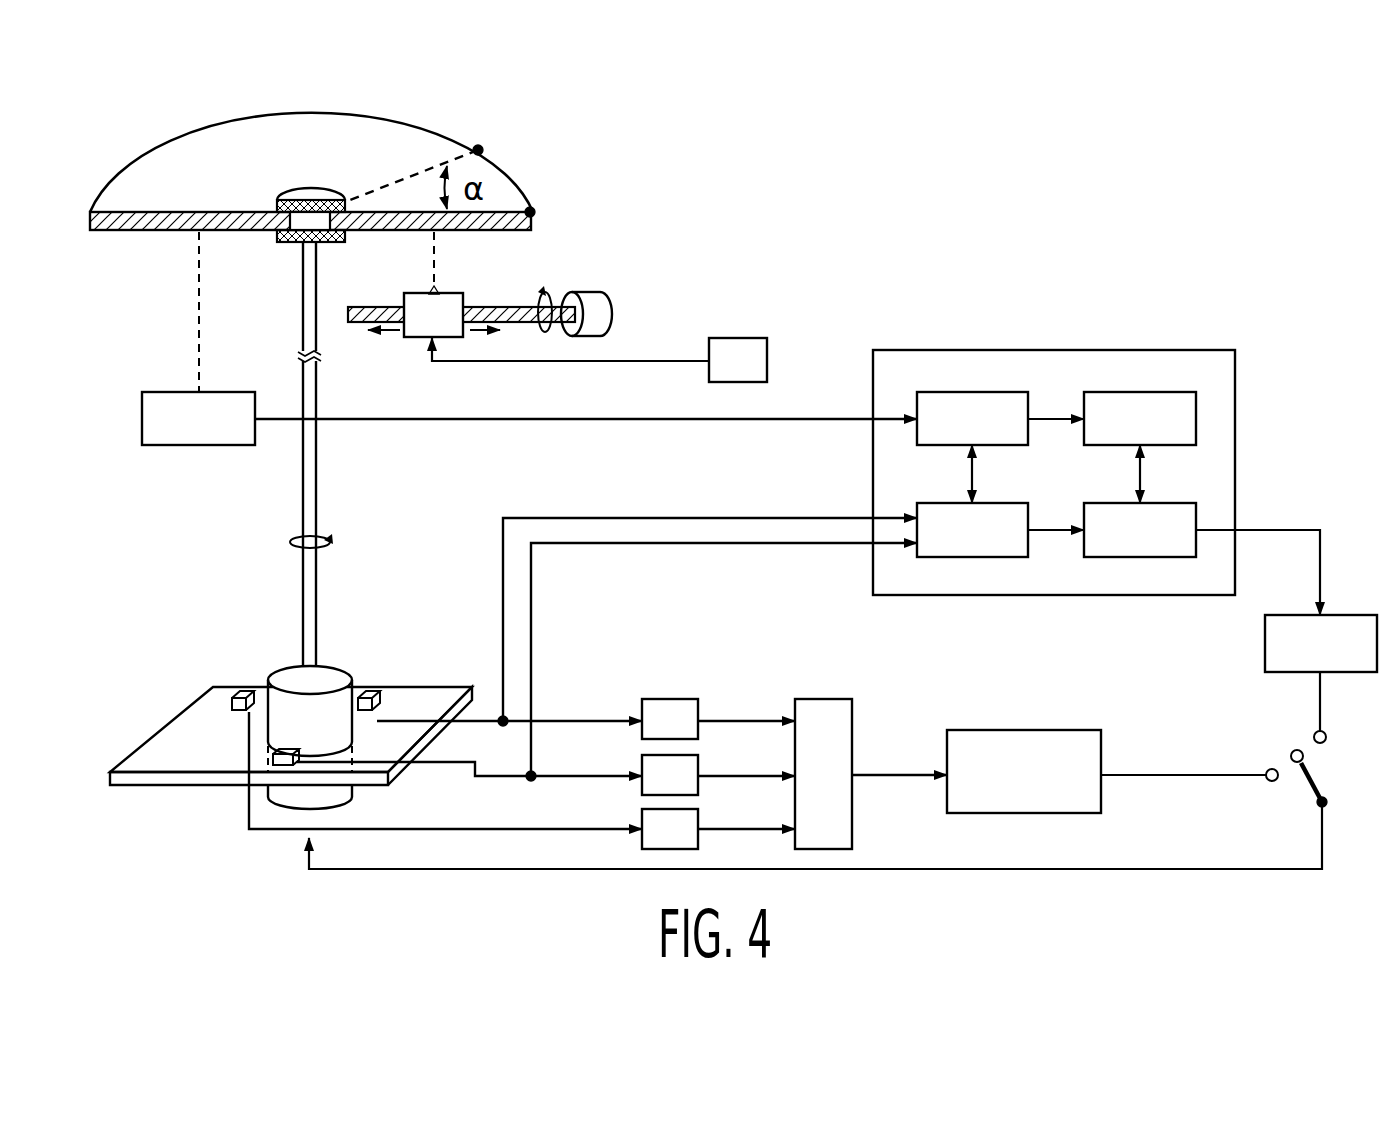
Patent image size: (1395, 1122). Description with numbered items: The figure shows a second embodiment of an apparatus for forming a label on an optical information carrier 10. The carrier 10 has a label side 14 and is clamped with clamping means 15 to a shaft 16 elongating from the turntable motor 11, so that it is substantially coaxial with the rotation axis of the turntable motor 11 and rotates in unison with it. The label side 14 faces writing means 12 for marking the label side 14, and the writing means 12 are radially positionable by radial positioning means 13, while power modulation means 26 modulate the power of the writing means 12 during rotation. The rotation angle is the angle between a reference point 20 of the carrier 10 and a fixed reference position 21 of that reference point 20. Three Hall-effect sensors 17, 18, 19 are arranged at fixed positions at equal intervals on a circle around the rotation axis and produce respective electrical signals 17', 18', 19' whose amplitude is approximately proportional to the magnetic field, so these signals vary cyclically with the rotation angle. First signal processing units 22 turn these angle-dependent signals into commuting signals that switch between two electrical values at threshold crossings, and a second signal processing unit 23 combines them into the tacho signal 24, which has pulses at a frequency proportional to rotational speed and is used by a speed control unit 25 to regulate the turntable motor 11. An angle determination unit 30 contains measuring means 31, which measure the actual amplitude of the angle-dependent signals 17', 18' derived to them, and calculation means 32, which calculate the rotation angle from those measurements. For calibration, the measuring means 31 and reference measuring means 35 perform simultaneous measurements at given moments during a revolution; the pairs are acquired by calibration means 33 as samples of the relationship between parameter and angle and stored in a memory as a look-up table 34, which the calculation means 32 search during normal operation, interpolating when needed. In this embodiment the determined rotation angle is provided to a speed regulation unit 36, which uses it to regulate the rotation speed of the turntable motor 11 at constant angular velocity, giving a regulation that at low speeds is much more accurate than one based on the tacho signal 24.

The optical information carrier 10 is at (150, 152).
The turntable motor 11 is at (283, 672).
The writing means 12 is at (412, 337).
The radial positioning means 13 is at (590, 292).
The label side 14 is at (173, 232).
The clamping means 15 is at (305, 188).
The shaft 16 is at (312, 455).
The Hall-effect sensor 17 is at (373, 664).
The Hall-effect sensor 18 is at (256, 813).
The Hall-effect sensor 19 is at (232, 664).
The electrical signal 17' is at (509, 687).
The electrical signal 18' is at (469, 748).
The electrical signal 19' is at (445, 770).
The reference point 20 is at (478, 150).
The fixed reference position 21 is at (531, 212).
The first signal processing unit 22 is at (668, 699).
The second signal processing unit 23 is at (818, 699).
The tacho signal 24 is at (890, 775).
The speed control unit 25 is at (1024, 730).
The power modulation means 26 is at (738, 338).
The angle determination unit 30 is at (1054, 479).
The measuring means 31 is at (962, 557).
The calculation means 32 is at (1142, 557).
The calibration means 33 is at (966, 392).
The look-up table 34 is at (1148, 392).
The reference measuring means 35 is at (162, 446).
The speed regulation unit 36 is at (1356, 615).